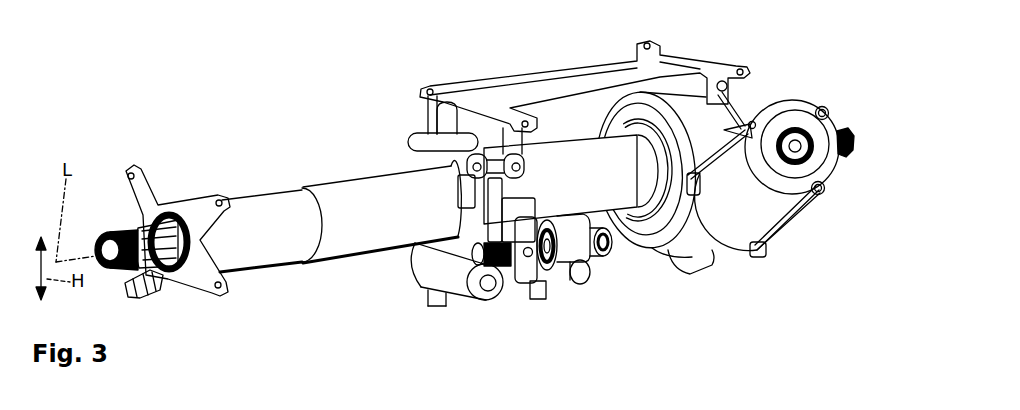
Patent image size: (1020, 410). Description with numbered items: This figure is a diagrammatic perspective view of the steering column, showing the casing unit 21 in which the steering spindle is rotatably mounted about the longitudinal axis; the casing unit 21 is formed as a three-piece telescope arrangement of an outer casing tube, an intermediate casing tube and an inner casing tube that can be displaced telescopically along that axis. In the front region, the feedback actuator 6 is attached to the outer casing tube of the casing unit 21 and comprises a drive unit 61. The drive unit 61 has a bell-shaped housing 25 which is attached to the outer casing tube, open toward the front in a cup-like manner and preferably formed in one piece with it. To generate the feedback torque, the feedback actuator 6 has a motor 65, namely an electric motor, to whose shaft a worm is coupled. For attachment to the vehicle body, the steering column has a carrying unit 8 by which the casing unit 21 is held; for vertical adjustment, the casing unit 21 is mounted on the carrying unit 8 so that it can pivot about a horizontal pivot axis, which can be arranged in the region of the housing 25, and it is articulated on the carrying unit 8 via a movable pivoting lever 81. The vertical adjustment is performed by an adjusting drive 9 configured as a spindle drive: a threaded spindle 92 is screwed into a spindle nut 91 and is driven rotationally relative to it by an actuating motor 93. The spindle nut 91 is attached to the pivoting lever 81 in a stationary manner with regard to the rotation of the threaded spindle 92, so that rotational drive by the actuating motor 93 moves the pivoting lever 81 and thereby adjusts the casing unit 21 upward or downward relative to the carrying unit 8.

The casing unit 21 is at (316, 165).
The pivoting lever 81 is at (489, 158).
The carrying unit 8 is at (580, 86).
The housing 25 is at (681, 105).
The feedback actuator 6 is at (781, 50).
The motor 65 is at (764, 203).
The drive unit 61 is at (657, 249).
The adjusting drive 9 is at (586, 292).
The spindle nut 91 is at (511, 268).
The actuating motor 93 is at (540, 283).
The threaded spindle 92 is at (551, 262).